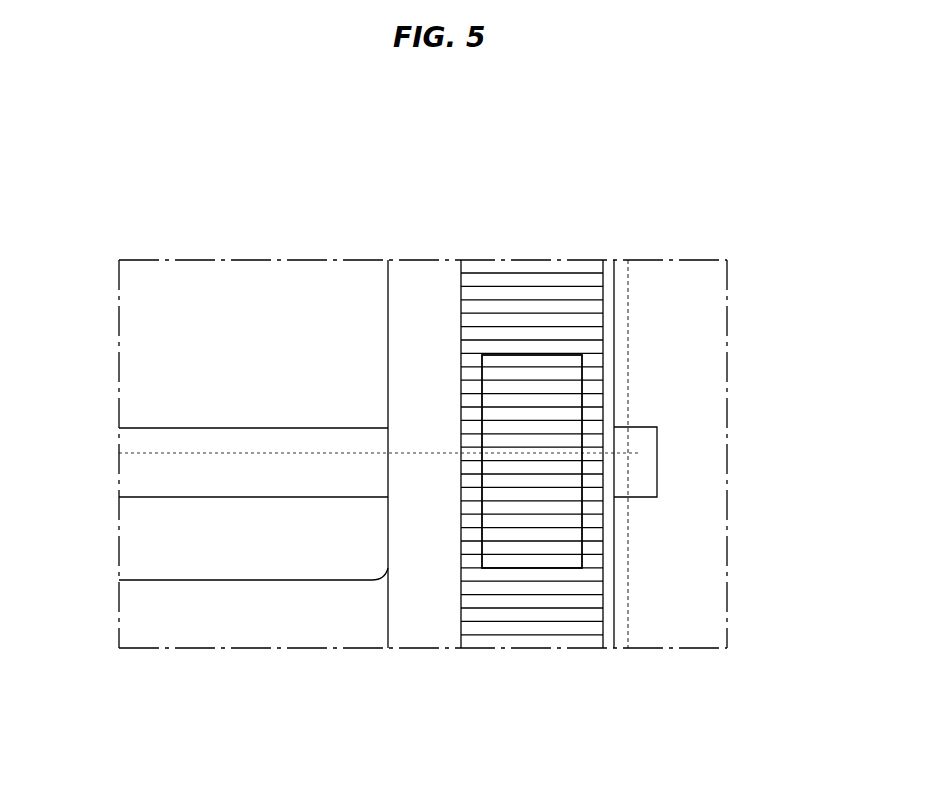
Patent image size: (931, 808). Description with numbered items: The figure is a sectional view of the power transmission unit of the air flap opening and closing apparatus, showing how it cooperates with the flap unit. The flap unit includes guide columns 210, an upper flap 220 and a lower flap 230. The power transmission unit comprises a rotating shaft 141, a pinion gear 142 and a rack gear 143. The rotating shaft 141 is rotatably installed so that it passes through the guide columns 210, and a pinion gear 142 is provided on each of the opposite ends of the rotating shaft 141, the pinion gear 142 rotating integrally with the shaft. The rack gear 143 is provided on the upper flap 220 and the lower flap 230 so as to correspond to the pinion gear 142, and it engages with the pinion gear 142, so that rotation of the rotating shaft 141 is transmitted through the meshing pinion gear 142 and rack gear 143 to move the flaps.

The guide column 210 is at (425, 287).
The upper flap 220 is at (628, 355).
The rotating shaft 141 is at (180, 497).
The pinion gear 142 is at (570, 535).
The rack gear 143 is at (520, 605).
The lower flap 230 is at (292, 608).